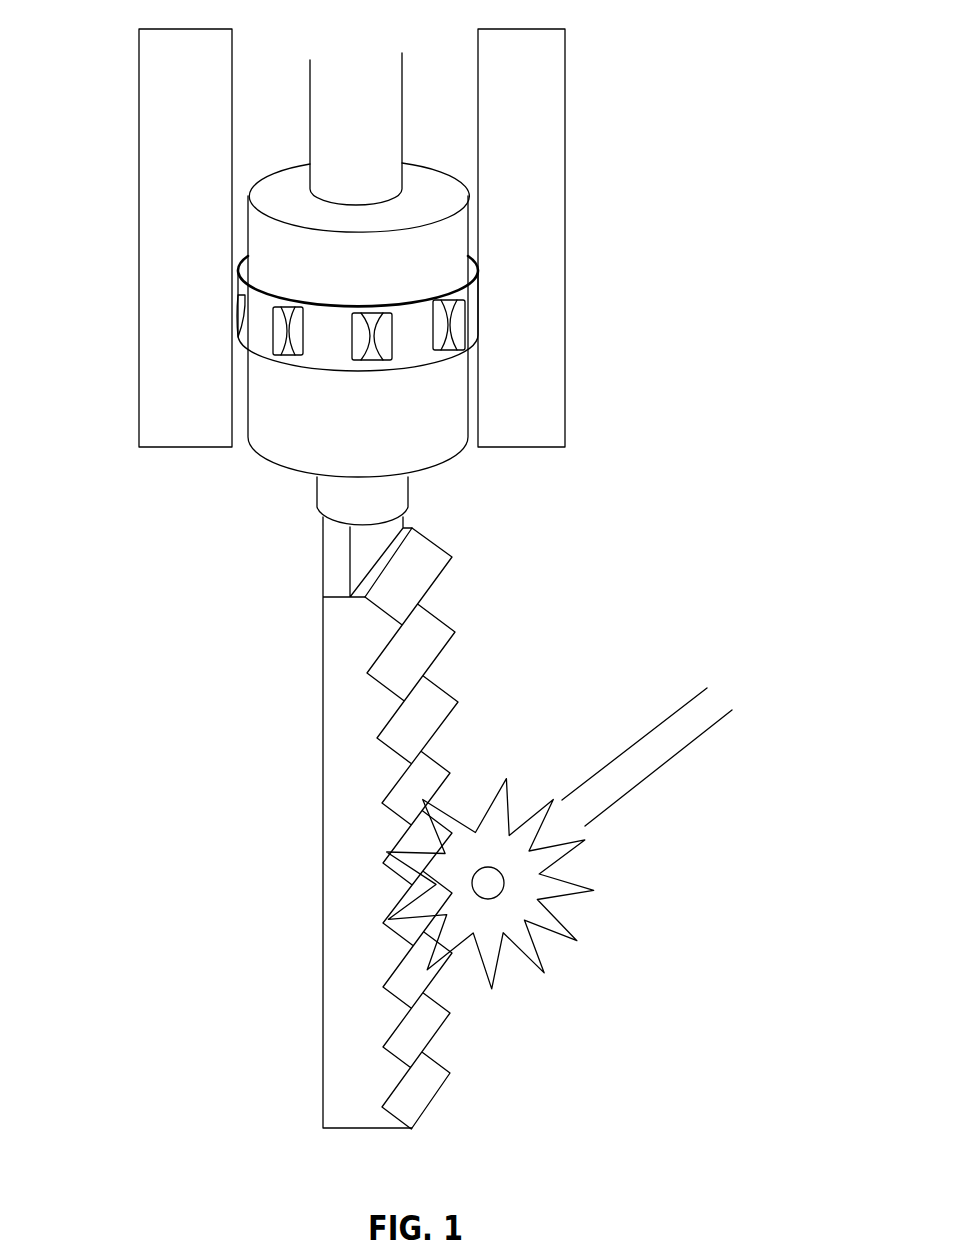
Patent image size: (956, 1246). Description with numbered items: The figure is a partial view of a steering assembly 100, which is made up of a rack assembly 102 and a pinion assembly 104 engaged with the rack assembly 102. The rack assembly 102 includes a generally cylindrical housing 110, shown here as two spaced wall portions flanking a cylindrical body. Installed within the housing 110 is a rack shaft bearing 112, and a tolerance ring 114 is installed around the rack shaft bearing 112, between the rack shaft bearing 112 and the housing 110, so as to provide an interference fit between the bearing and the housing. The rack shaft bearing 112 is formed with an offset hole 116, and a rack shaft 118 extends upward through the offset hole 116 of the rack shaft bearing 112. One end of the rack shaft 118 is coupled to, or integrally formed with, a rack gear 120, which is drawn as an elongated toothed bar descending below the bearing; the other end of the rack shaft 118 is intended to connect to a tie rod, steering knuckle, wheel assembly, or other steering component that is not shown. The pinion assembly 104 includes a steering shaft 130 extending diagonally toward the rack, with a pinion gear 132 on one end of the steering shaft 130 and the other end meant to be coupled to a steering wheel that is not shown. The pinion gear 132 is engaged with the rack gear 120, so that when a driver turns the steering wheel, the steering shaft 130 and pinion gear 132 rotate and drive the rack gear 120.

The steering assembly 100 is at (440, 569).
The rack assembly 102 is at (386, 267).
The pinion assembly 104 is at (530, 823).
The housing 110 is at (163, 343).
The rack shaft bearing 112 is at (440, 428).
The tolerance ring 114 is at (473, 350).
The offset hole 116 is at (332, 196).
The rack shaft 118 is at (348, 115).
The rack gear 120 is at (343, 810).
The steering shaft 130 is at (692, 723).
The pinion gear 132 is at (532, 948).